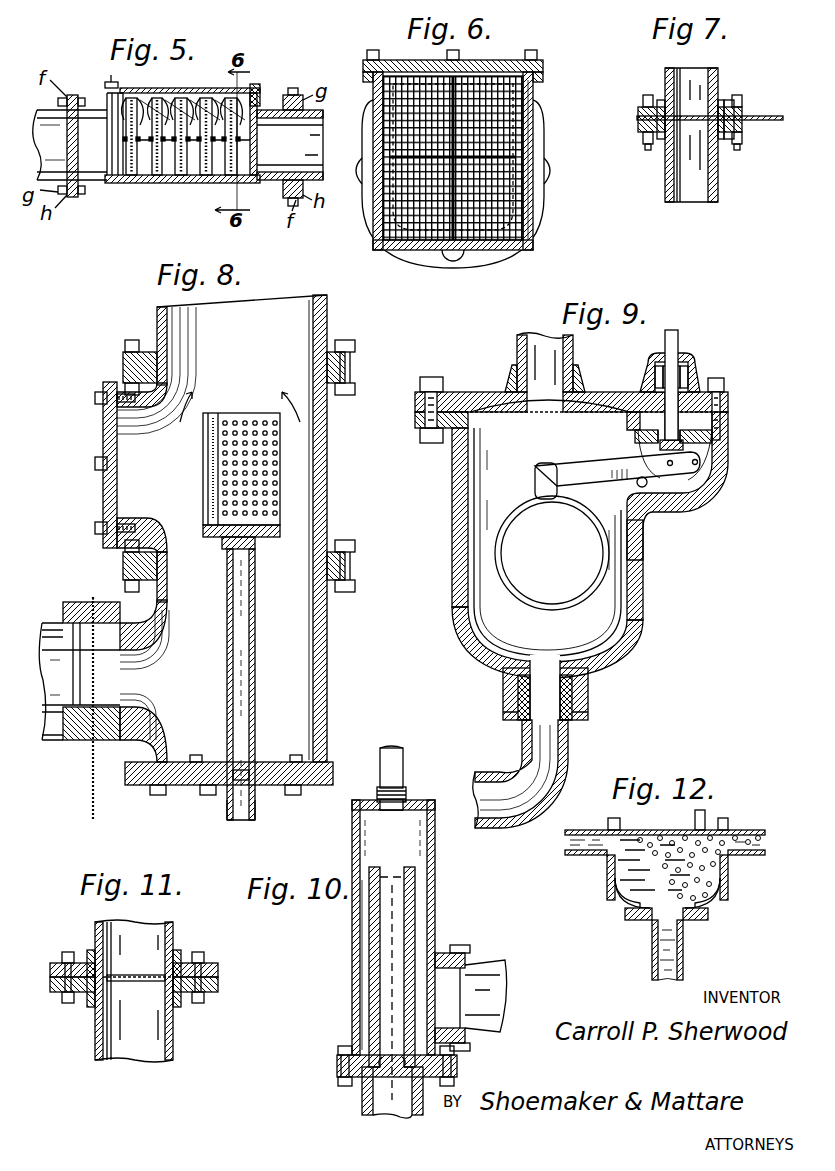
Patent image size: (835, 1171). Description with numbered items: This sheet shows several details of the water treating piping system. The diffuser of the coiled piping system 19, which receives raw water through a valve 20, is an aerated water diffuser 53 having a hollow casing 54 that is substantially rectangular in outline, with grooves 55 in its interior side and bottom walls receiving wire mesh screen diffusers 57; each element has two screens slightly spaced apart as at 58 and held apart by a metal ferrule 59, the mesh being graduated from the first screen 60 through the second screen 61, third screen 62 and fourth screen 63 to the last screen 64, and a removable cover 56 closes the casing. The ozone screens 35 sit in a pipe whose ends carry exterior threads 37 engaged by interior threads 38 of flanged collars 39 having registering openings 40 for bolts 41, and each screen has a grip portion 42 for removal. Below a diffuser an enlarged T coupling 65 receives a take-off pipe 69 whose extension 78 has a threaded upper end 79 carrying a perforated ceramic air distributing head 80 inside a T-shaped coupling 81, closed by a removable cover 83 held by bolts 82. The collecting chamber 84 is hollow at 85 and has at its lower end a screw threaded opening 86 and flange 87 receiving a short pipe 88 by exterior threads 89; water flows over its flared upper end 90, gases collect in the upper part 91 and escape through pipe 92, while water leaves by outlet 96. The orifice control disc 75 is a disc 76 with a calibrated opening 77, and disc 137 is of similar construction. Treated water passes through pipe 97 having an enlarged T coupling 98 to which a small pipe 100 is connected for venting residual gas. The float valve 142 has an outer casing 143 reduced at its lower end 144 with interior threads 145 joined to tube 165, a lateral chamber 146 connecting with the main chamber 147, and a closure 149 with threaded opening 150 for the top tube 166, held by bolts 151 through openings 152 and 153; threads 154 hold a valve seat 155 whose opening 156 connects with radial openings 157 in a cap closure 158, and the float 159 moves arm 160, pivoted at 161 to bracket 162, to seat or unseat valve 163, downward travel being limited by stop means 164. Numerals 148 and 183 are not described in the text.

In FIG. 10, the coiled piping system 19 is at (360, 1123).
In FIG. 8, the valve 20 is at (63, 730).
In FIG. 7, the wire mesh screens or diffusers 35 is at (700, 125).
In FIG. 8, the wire mesh screens or diffusers 35 is at (93, 600).
In FIG. 7, the exterior threads 37 is at (668, 108).
In FIG. 7, the interior threads 38 is at (658, 105).
In FIG. 7, the flanged collars 39 is at (726, 103).
In FIG. 7, the registering openings 40 is at (638, 117).
In FIG. 7, the bolts 41 is at (645, 145).
In FIG. 7, the extending tab or grip portion 42 is at (770, 121).
In FIG. 8, the extending tab or grip portion 42 is at (90, 800).
In FIG. 5, the aerated water diffuser 53 is at (171, 184).
In FIG. 6, the aerated water diffuser 53 is at (390, 252).
In FIG. 8, the aerated water diffuser 53 is at (327, 332).
In FIG. 5, the hollow casing 54 is at (114, 183).
In FIG. 6, the hollow casing 54 is at (533, 238).
In FIG. 5, the grooves 55 is at (135, 177).
In FIG. 6, the grooves 55 is at (383, 215).
In FIG. 5, the removable cover 56 is at (107, 82).
In FIG. 6, the removable cover 56 is at (375, 50).
In FIG. 5, the diffusers 57 is at (220, 152).
In FIG. 6, the diffusers 57 is at (520, 207).
In FIG. 5, the spacing 58 is at (198, 177).
In FIG. 5, the metal ferrule 59 is at (107, 95).
In FIG. 6, the metal ferrule 59 is at (478, 262).
In FIG. 5, the first screen 60 is at (152, 100).
In FIG. 5, the second screen 61 is at (178, 100).
In FIG. 5, the third screen 62 is at (203, 100).
In FIG. 5, the fourth screen 63 is at (211, 98).
In FIG. 5, the last screen 64 is at (254, 90).
In FIG. 8, the enlarged T coupling 65 is at (328, 724).
In FIG. 8, the take-off pipe 69 is at (236, 820).
In FIG. 11, the take-off pipe 69 is at (165, 1055).
In FIG. 11, the orifice control disc 75 is at (150, 975).
In FIG. 11, the disc 76 is at (218, 977).
In FIG. 11, the calibrated opening 77 is at (128, 982).
In FIG. 8, the pipe extension 78 is at (256, 724).
In FIG. 8, the threaded upper end 79 is at (255, 552).
In FIG. 8, the perforated ceramic air distributing head 80 is at (208, 500).
In FIG. 8, the T-shaped coupling 81 is at (327, 493).
In FIG. 8, the bolts 82 is at (95, 463).
In FIG. 8, the removable cover 83 is at (107, 390).
In FIG. 10, the gas and nitrogen collecting and discharging chamber 84 is at (436, 924).
In FIG. 10, the hollow interior 85 is at (420, 855).
In FIG. 10, the screw threaded opening 86 is at (362, 1055).
In FIG. 10, the flange 87 is at (338, 1063).
In FIG. 10, the short pipe 88 is at (370, 978).
In FIG. 10, the exterior screw threads 89 is at (406, 1066).
In FIG. 10, the flared upper end 90 is at (420, 876).
In FIG. 10, the upper part of chamber 91 is at (405, 815).
In FIG. 10, the pipe 92 is at (402, 751).
In FIG. 10, the outlet 96 is at (462, 975).
In FIG. 12, the pipe 97 is at (765, 832).
In FIG. 12, the enlarged T coupling 98 is at (650, 836).
In FIG. 12, the small diameter pipe 100 is at (705, 815).
In FIG. 12, the orifice control disc 137 is at (636, 920).
In FIG. 9, the valve 142 is at (443, 539).
In FIG. 9, the outer casing 143 is at (452, 577).
In FIG. 9, the reduced lower end 144 is at (589, 712).
In FIG. 9, the interior screw threads 145 is at (588, 720).
In FIG. 9, the small chamber 146 is at (700, 493).
In FIG. 9, the main chamber 147 is at (478, 592).
In FIG. 9, the valve seat 148 is at (729, 421).
In FIG. 9, the closure 149 is at (608, 392).
In FIG. 9, the interiorly screw threaded opening 150 is at (508, 382).
In FIG. 9, the bolts 151 is at (430, 378).
In FIG. 9, the opening 152 is at (415, 402).
In FIG. 9, the opening 153 is at (418, 426).
In FIG. 9, the interior screw threads 154 is at (698, 388).
In FIG. 9, the valve seat 155 is at (692, 370).
In FIG. 9, the opening 156 is at (675, 362).
In FIG. 9, the radially outwardly extending openings 157 is at (658, 365).
In FIG. 9, the cap closure 158 is at (676, 332).
In FIG. 9, the float 159 is at (552, 571).
In FIG. 9, the arm 160 is at (598, 466).
In FIG. 9, the pivot 161 is at (700, 462).
In FIG. 9, the fixed bracket 162 is at (714, 443).
In FIG. 9, the valve 163 is at (660, 426).
In FIG. 9, the stop means 164 is at (637, 486).
In FIG. 9, the tube 165 is at (518, 758).
In FIG. 9, the top tube 166 is at (527, 338).
In FIG. 12, the drain pipe 183 is at (655, 975).